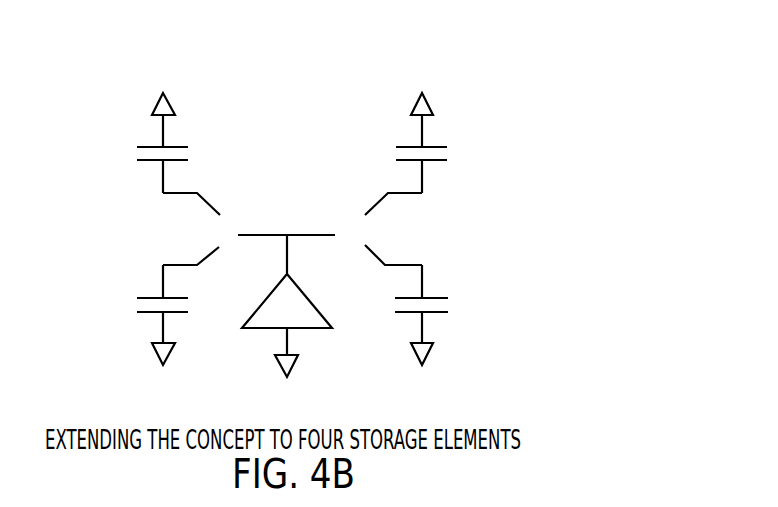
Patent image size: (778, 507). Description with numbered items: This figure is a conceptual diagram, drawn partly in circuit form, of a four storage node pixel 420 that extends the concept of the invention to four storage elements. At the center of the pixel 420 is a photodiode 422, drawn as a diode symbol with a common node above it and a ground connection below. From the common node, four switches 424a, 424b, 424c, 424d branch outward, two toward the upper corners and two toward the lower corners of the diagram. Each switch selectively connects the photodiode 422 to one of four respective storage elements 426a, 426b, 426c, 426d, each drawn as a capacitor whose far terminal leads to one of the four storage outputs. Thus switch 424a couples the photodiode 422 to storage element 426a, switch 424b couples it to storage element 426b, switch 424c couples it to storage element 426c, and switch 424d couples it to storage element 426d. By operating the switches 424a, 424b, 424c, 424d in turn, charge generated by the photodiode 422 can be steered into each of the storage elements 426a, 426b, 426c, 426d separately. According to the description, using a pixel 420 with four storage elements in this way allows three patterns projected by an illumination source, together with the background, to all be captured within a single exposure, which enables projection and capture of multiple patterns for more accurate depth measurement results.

The pixel 420 is at (451, 74).
The photodiode 422 is at (310, 329).
The switch 424a is at (210, 200).
The switch 424b is at (378, 205).
The switch 424c is at (375, 253).
The switch 424d is at (210, 250).
The storage element 426a is at (137, 151).
The storage element 426b is at (447, 156).
The storage element 426c is at (443, 305).
The storage element 426d is at (137, 303).